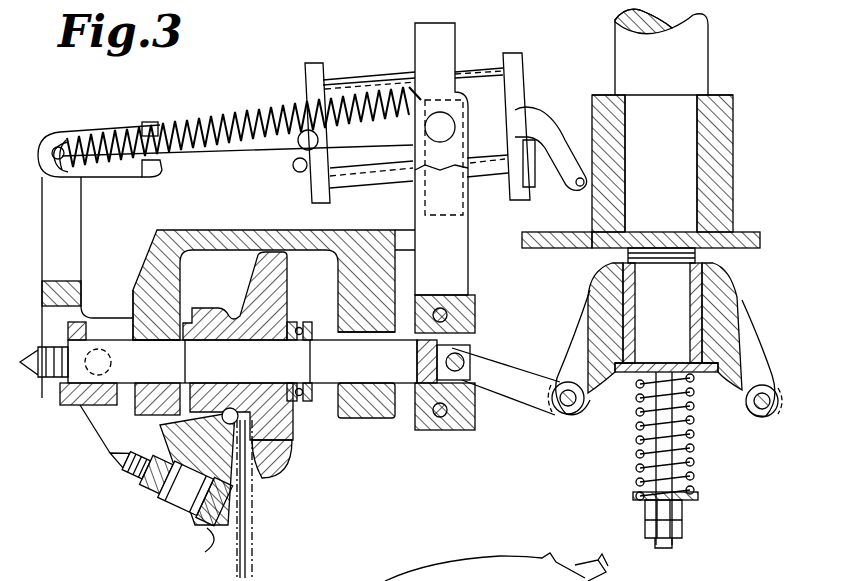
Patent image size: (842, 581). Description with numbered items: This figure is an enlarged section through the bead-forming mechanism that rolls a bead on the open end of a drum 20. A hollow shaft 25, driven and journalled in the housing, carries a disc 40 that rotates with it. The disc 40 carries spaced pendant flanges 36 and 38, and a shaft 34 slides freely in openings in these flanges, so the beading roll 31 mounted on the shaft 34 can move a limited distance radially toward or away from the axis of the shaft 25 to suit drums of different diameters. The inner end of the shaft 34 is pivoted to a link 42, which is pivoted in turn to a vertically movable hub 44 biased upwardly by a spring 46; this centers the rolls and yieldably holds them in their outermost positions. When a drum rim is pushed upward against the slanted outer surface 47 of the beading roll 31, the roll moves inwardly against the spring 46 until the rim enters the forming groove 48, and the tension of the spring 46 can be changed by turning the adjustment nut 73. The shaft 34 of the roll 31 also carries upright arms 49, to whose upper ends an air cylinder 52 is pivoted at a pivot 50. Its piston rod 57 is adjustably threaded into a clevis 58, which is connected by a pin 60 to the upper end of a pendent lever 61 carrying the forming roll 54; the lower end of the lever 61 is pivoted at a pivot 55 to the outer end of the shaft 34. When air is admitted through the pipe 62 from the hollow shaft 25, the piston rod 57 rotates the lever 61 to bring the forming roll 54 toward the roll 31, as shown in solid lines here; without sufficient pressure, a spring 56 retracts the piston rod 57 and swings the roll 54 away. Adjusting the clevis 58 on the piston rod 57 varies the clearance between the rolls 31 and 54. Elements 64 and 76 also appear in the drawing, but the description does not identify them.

The drum 20 is at (225, 500).
The hollow shaft 25 is at (676, 128).
The beading roll 31 is at (290, 434).
The shaft 34 is at (269, 361).
The pendant flange 36 is at (133, 302).
The pendant flange 38 is at (350, 306).
The disc 40 is at (260, 230).
The link 42 is at (510, 387).
The vertically movable hub 44 is at (608, 275).
The spring 46 is at (686, 448).
The slanted outer surface 47 is at (287, 437).
The forming groove 48 is at (232, 318).
The upright arm 49 is at (418, 205).
The pivot 50 is at (445, 128).
The air cylinder 52 is at (495, 92).
The forming roll 54 is at (173, 513).
The pivot 55 is at (80, 400).
The spring 56 is at (245, 100).
The piston rod 57 is at (230, 152).
The clevis 58 is at (108, 170).
The pin 60 is at (52, 154).
The pendent lever 61 is at (66, 240).
The pipe 62 is at (540, 138).
The lever 64 is at (205, 552).
The adjustment nut 73 is at (680, 526).
The slider 76 is at (150, 122).